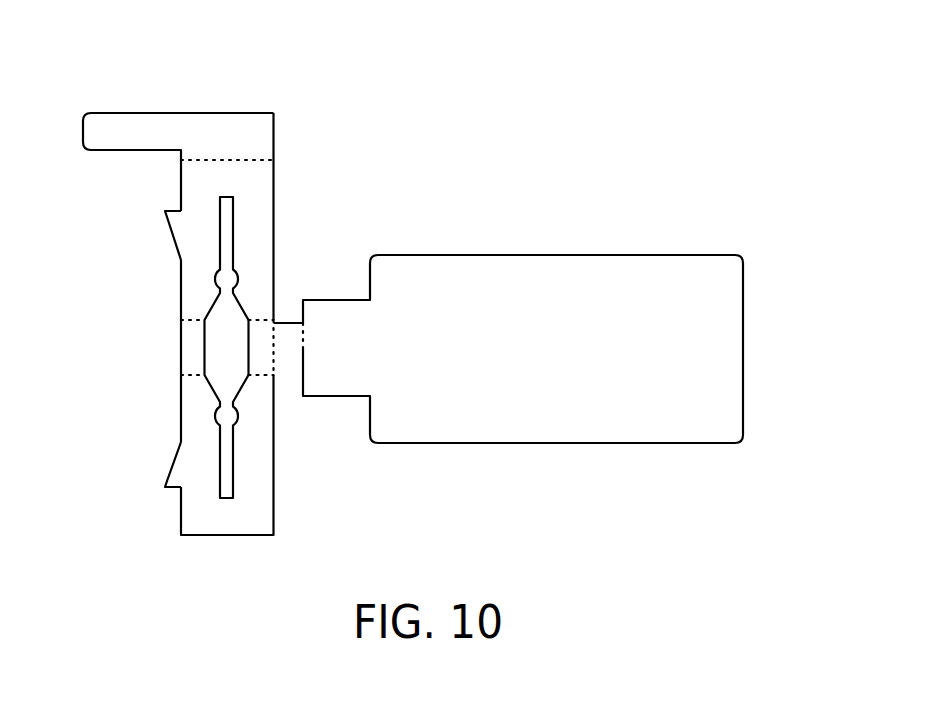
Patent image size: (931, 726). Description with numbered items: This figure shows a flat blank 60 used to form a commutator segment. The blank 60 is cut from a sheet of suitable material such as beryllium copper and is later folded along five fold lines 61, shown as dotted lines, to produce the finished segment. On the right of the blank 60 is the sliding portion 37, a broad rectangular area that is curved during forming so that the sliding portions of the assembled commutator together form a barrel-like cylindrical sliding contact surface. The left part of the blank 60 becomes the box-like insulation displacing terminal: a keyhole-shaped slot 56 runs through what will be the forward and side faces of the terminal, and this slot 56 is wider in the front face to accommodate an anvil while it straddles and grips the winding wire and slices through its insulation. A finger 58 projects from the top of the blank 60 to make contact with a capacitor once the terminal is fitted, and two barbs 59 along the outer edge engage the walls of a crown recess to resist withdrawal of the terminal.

The sliding portion 37 is at (537, 273).
The slot 56 is at (230, 252).
The finger 58 is at (104, 129).
The barb 59 is at (165, 217).
The blank 60 is at (680, 158).
The fold line 61 is at (230, 158).